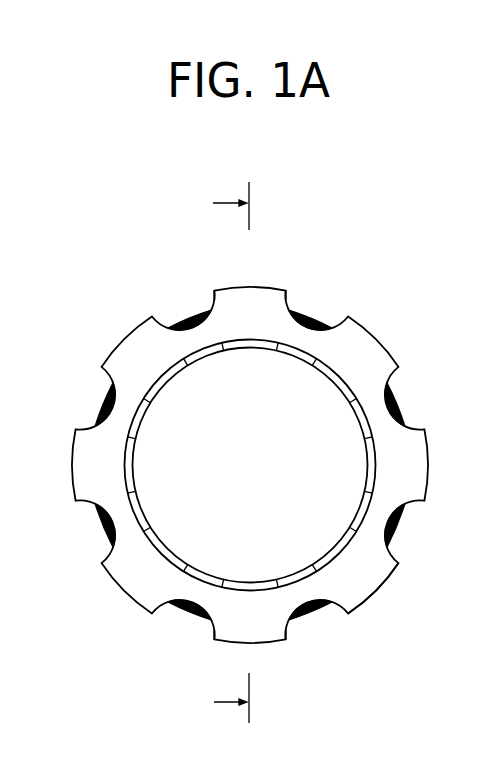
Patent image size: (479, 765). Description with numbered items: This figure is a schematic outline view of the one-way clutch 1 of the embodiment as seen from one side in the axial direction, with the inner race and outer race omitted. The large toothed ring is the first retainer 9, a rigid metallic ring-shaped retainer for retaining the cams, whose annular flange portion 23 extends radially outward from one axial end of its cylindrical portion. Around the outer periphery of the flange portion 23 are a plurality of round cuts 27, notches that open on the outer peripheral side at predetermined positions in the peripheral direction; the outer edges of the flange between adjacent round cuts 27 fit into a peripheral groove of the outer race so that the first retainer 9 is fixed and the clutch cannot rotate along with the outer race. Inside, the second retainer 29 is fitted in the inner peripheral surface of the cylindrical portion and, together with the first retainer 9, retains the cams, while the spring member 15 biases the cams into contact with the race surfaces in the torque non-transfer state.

The one-way clutch 1 is at (301, 211).
The first retainer 9 is at (375, 333).
The spring member 15 is at (396, 408).
The flange portion 23 is at (368, 583).
The round cuts 27 is at (215, 304).
The second retainer 29 is at (176, 381).